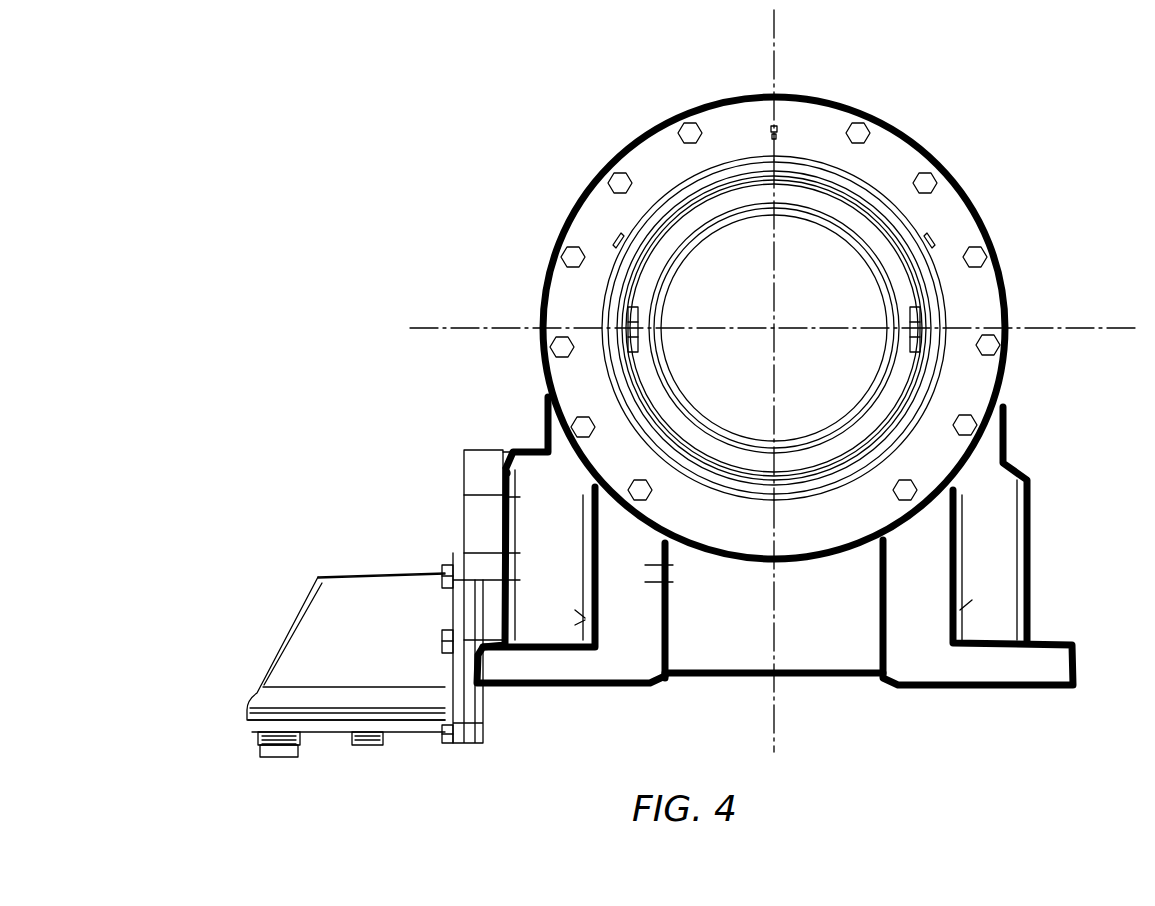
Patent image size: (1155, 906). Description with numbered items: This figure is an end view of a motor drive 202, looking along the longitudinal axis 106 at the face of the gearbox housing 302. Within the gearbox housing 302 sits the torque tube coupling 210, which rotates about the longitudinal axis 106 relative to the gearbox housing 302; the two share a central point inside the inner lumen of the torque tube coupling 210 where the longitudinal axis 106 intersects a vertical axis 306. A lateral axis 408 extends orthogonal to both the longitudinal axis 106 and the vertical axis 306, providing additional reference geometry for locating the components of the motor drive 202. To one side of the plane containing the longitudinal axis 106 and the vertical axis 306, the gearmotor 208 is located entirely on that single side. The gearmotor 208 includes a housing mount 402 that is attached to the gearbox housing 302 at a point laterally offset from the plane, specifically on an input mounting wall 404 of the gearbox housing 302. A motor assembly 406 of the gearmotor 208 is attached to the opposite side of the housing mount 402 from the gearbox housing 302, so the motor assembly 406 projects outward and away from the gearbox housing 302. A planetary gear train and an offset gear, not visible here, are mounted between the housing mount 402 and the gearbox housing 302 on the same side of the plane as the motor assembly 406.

The motor drive 202 is at (1032, 116).
The gearbox housing 302 is at (656, 134).
The torque tube coupling 210 is at (897, 377).
The longitudinal axis 106 is at (777, 327).
The vertical axis 306 is at (775, 32).
The lateral axis 408 is at (467, 328).
The input mounting wall 404 is at (505, 470).
The housing mount 402 is at (463, 457).
The gearmotor 208 is at (348, 576).
The motor assembly 406 is at (346, 647).